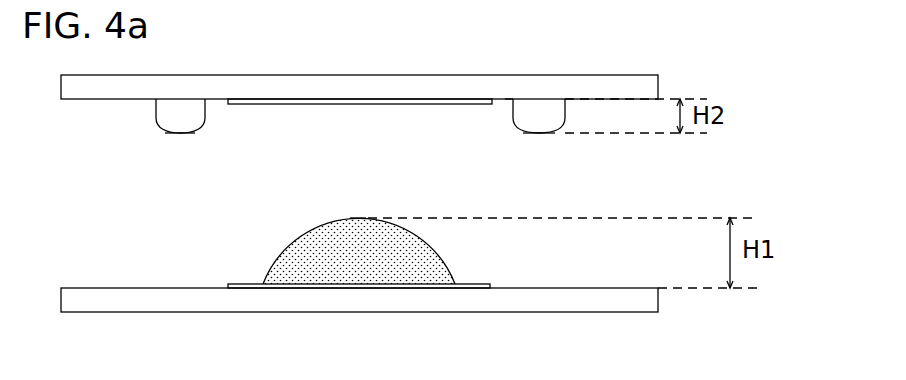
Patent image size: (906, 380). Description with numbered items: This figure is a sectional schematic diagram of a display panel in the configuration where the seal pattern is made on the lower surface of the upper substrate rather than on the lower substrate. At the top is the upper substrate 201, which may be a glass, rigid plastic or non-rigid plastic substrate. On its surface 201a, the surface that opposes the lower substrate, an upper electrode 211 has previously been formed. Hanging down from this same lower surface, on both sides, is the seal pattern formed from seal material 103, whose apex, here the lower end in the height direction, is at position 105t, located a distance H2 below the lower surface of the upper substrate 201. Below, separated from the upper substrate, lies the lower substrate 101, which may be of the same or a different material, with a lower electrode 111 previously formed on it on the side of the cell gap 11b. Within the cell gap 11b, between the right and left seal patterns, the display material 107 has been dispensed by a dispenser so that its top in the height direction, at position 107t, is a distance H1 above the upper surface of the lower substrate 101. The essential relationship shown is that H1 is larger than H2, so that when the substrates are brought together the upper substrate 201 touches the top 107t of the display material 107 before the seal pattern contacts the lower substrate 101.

The upper substrate 201 is at (598, 87).
The surface of the upper substrate opposing the lower substrate 201a is at (505, 97).
The upper electrode 211 is at (243, 75).
The seal material 103 is at (168, 127).
The position of the apex in height direction of the seal pattern 105t is at (183, 135).
The display material 107 is at (298, 245).
The position of the top in height direction of the display material 107t is at (358, 218).
The lower electrode 111 is at (235, 284).
The cell gap 11b is at (484, 259).
The lower substrate 101 is at (598, 304).